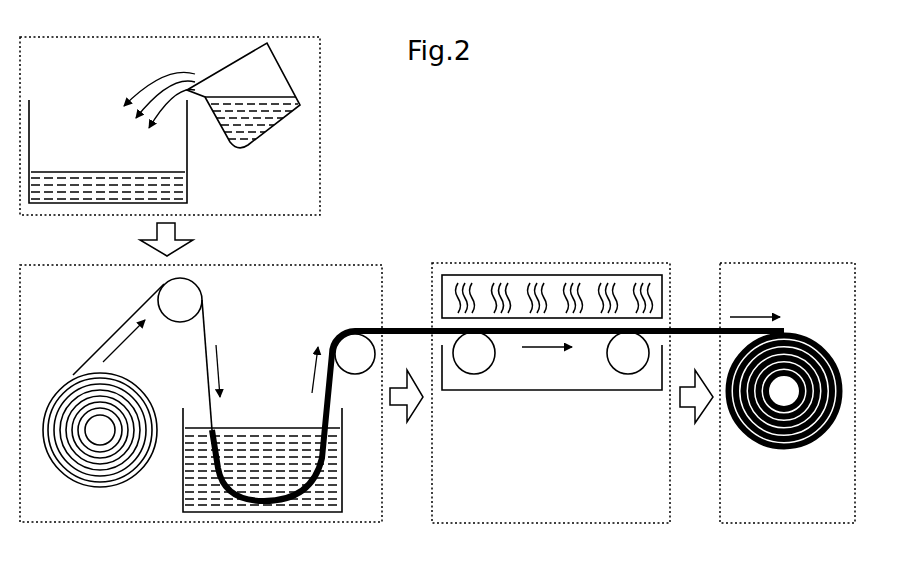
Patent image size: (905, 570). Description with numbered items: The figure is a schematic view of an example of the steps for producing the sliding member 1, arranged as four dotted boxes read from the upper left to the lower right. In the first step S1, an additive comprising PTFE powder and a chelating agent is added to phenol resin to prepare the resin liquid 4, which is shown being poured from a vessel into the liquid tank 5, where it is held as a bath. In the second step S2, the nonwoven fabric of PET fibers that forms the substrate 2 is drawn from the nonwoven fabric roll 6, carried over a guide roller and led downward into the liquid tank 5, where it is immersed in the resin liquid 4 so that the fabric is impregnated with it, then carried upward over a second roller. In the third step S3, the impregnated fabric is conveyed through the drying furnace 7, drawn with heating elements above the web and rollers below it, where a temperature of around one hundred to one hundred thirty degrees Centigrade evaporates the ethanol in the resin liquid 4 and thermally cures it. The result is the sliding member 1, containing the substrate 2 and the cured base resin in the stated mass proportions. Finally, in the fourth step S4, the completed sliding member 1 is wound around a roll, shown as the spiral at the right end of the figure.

The sliding member 1 is at (800, 333).
The substrate 2 is at (205, 333).
The resin liquid 4 is at (120, 171).
The liquid tank 5 is at (188, 160).
The nonwoven fabric roll 6 is at (68, 478).
The drying furnace 7 is at (494, 391).
The resin liquid preparation and supply step S1 is at (320, 119).
The impregnation step S2 is at (330, 265).
The drying and curing step S3 is at (605, 263).
The winding step S4 is at (808, 263).